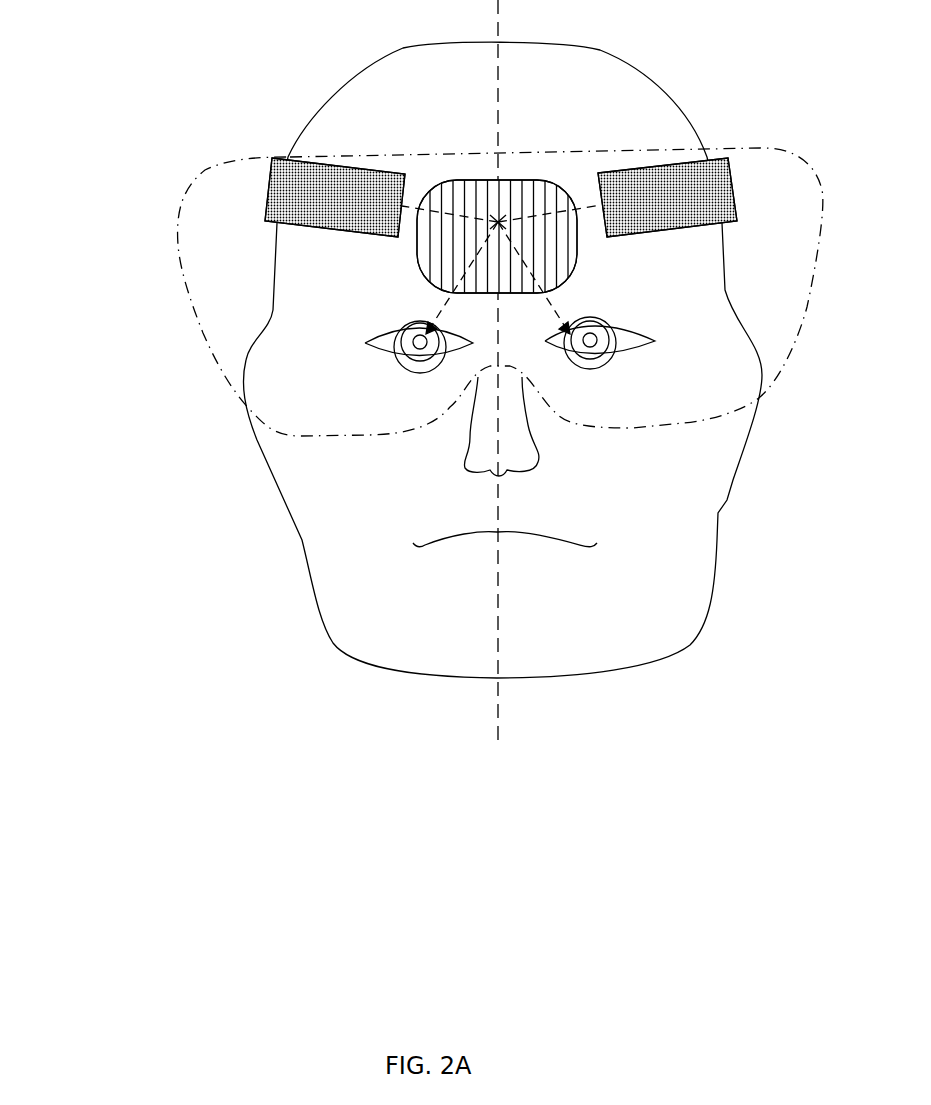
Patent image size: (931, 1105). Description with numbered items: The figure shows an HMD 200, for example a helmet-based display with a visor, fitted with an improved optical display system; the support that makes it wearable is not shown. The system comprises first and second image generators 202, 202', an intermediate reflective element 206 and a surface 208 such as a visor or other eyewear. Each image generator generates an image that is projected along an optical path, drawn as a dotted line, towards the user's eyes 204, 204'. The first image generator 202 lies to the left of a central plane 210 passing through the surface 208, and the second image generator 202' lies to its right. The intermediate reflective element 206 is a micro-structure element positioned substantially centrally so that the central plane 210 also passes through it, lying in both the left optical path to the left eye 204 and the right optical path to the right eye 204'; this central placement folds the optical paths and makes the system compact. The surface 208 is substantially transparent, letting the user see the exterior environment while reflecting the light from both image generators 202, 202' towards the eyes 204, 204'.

The HMD 200 is at (157, 253).
The first image generator 202 is at (335, 221).
The second image generator 202' is at (667, 215).
The left eye 204 is at (435, 278).
The right eye 204' is at (599, 278).
The intermediate reflective element 206 is at (528, 192).
The surface 208 is at (758, 168).
The central plane 210 is at (496, 16).